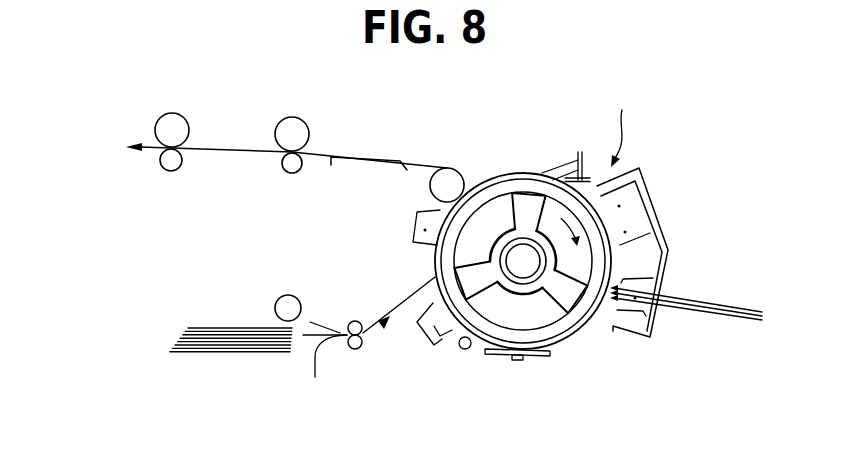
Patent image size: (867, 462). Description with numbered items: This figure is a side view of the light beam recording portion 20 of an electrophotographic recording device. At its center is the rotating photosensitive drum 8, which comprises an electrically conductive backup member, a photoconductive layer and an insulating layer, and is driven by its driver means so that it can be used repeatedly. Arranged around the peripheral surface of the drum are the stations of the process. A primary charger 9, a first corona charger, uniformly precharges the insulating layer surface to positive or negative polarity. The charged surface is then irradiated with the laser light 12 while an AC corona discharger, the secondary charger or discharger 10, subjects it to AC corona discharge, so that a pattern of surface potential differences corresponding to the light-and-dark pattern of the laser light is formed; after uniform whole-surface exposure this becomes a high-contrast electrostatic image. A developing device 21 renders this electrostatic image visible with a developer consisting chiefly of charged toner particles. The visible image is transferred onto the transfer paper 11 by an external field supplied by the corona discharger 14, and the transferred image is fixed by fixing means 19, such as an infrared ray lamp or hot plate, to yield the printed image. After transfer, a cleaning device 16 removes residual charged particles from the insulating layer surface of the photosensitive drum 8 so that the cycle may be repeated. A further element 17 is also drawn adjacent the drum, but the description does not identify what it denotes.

The photosensitive drum 8 is at (515, 173).
The primary charger 9 is at (640, 190).
The secondary charger or discharger 10 is at (635, 298).
The transfer paper 11 is at (134, 140).
The laser light 12 is at (726, 307).
The corona discharger 14 is at (425, 230).
The cleaning device 16 is at (568, 166).
The discharge lamp 17 is at (447, 330).
The fixing means 19 is at (366, 156).
The light beam recording portion 20 is at (644, 105).
The developing device 21 is at (533, 356).